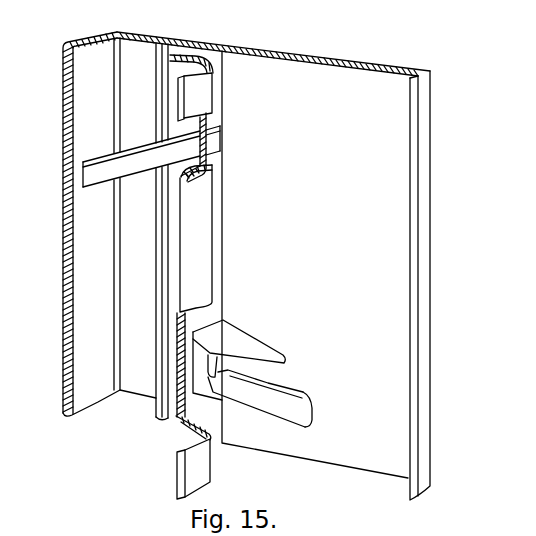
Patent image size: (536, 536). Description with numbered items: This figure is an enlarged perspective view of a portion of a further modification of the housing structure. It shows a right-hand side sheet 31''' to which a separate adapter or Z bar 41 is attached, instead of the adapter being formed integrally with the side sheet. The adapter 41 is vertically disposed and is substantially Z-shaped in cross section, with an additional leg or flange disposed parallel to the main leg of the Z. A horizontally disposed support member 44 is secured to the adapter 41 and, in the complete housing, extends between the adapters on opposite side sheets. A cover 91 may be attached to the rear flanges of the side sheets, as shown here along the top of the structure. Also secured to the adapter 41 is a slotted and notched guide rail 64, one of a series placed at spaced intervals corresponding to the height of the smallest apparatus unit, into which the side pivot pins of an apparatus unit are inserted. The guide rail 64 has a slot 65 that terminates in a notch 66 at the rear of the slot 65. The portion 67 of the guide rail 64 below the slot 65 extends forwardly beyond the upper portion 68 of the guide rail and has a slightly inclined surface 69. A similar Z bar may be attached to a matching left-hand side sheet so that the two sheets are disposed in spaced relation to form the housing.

The cover 91 is at (138, 41).
The right-hand side sheet 31''' is at (326, 274).
The support member 44 is at (146, 148).
The adapter 41 is at (182, 238).
The guide rail 64 is at (278, 340).
The slot 65 is at (275, 375).
The notch 66 is at (219, 372).
The portion of the guide rail below the slot 67 is at (310, 430).
The upper portion of the guide rail 68 is at (278, 354).
The inclined surface 69 is at (303, 398).